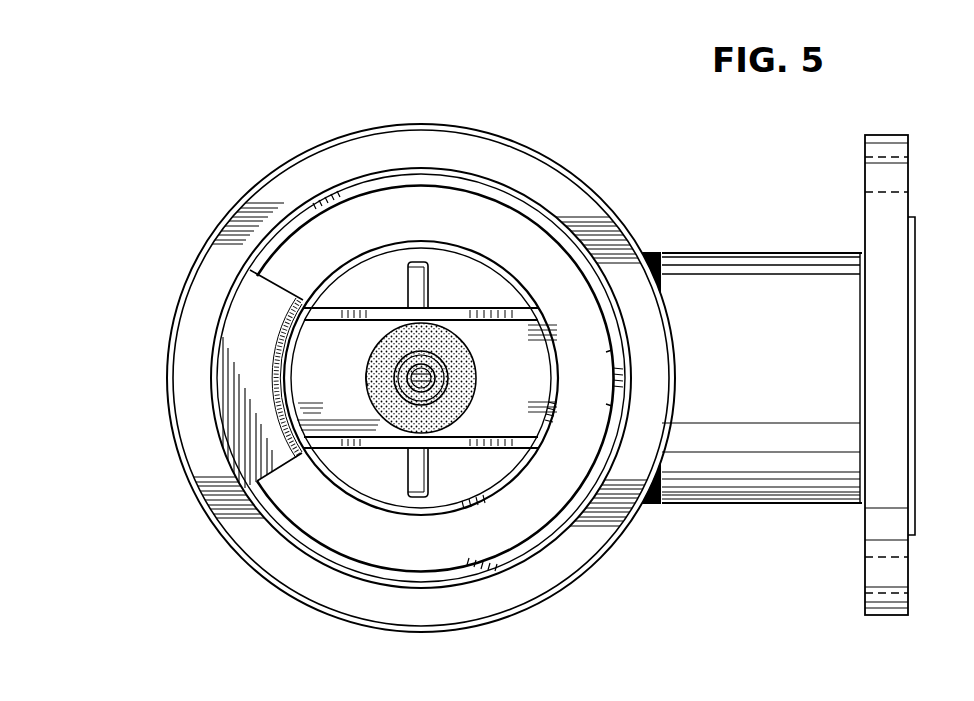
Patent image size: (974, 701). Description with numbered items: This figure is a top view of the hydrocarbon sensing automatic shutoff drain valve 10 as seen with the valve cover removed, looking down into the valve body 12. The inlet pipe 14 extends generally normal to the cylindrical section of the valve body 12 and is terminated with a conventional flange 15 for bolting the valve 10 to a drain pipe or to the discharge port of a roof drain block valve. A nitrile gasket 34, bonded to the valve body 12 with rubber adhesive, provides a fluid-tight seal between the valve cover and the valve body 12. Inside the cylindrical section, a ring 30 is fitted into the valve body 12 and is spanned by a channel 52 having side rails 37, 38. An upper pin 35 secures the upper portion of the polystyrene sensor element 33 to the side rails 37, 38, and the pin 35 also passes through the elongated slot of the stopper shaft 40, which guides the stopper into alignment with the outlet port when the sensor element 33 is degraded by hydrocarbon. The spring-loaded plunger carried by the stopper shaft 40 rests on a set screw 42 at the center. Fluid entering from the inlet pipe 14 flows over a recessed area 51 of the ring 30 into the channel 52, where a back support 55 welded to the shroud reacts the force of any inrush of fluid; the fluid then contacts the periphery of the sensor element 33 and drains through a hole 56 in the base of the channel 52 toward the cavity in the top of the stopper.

The hydrocarbon sensing automatic shutoff drain valve 10 is at (546, 119).
The valve body 12 is at (604, 190).
The inlet pipe 14 is at (723, 262).
The flange 15 is at (888, 146).
The ring 30 is at (270, 250).
The sensor element 33 is at (450, 357).
The gasket 34 is at (287, 182).
The upper pin 35 is at (428, 282).
The side rail 37 is at (373, 309).
The side rail 38 is at (366, 449).
The stopper shaft 40 is at (438, 387).
The set screw 42 is at (422, 384).
The recessed area 51 is at (617, 355).
The channel 52 is at (575, 410).
The back support 55 is at (271, 453).
The hole 56 is at (371, 375).